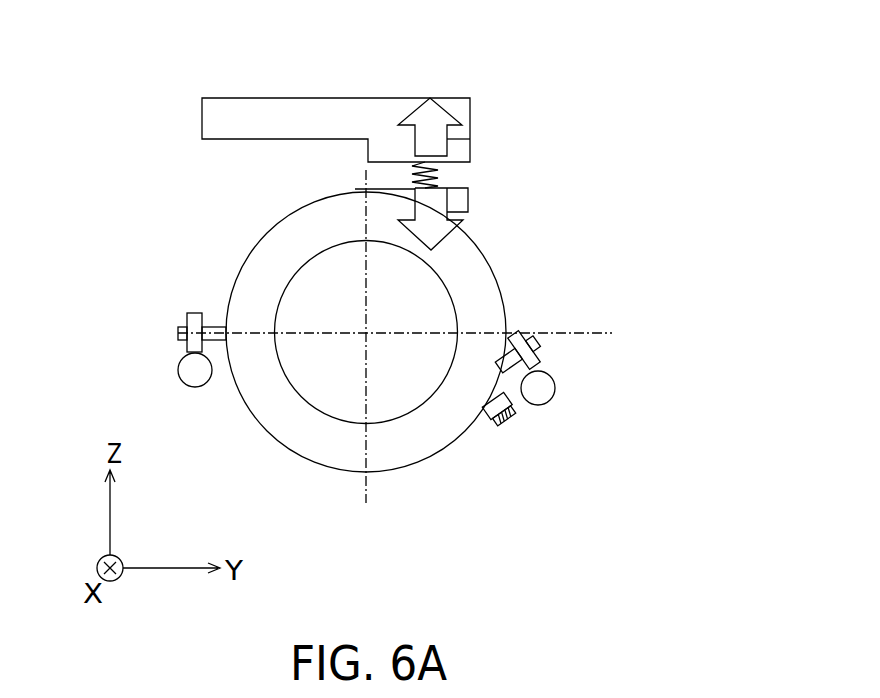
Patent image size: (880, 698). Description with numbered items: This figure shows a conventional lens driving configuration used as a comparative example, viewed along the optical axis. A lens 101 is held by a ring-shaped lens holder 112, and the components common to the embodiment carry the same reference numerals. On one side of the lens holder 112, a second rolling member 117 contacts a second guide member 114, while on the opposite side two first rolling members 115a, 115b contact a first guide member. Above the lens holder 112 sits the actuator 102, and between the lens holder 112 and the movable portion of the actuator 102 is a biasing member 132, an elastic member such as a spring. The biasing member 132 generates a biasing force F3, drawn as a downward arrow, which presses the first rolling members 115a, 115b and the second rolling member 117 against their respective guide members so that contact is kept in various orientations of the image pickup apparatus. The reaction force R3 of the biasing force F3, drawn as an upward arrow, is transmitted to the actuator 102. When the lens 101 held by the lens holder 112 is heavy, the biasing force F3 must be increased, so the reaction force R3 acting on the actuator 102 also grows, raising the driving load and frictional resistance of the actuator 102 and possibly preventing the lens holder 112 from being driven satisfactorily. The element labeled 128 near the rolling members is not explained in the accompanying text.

The actuator 102 is at (228, 115).
The reaction force R3 is at (427, 130).
The biasing member 132 is at (440, 175).
The biasing force F3 is at (440, 237).
The lens holder 112 is at (397, 443).
The lens 101 is at (397, 398).
The second rolling member 117 is at (187, 322).
The second guide member 114 is at (193, 370).
The first rolling member 115a is at (523, 336).
The first rolling member 115b is at (520, 410).
The ball 128 is at (547, 392).